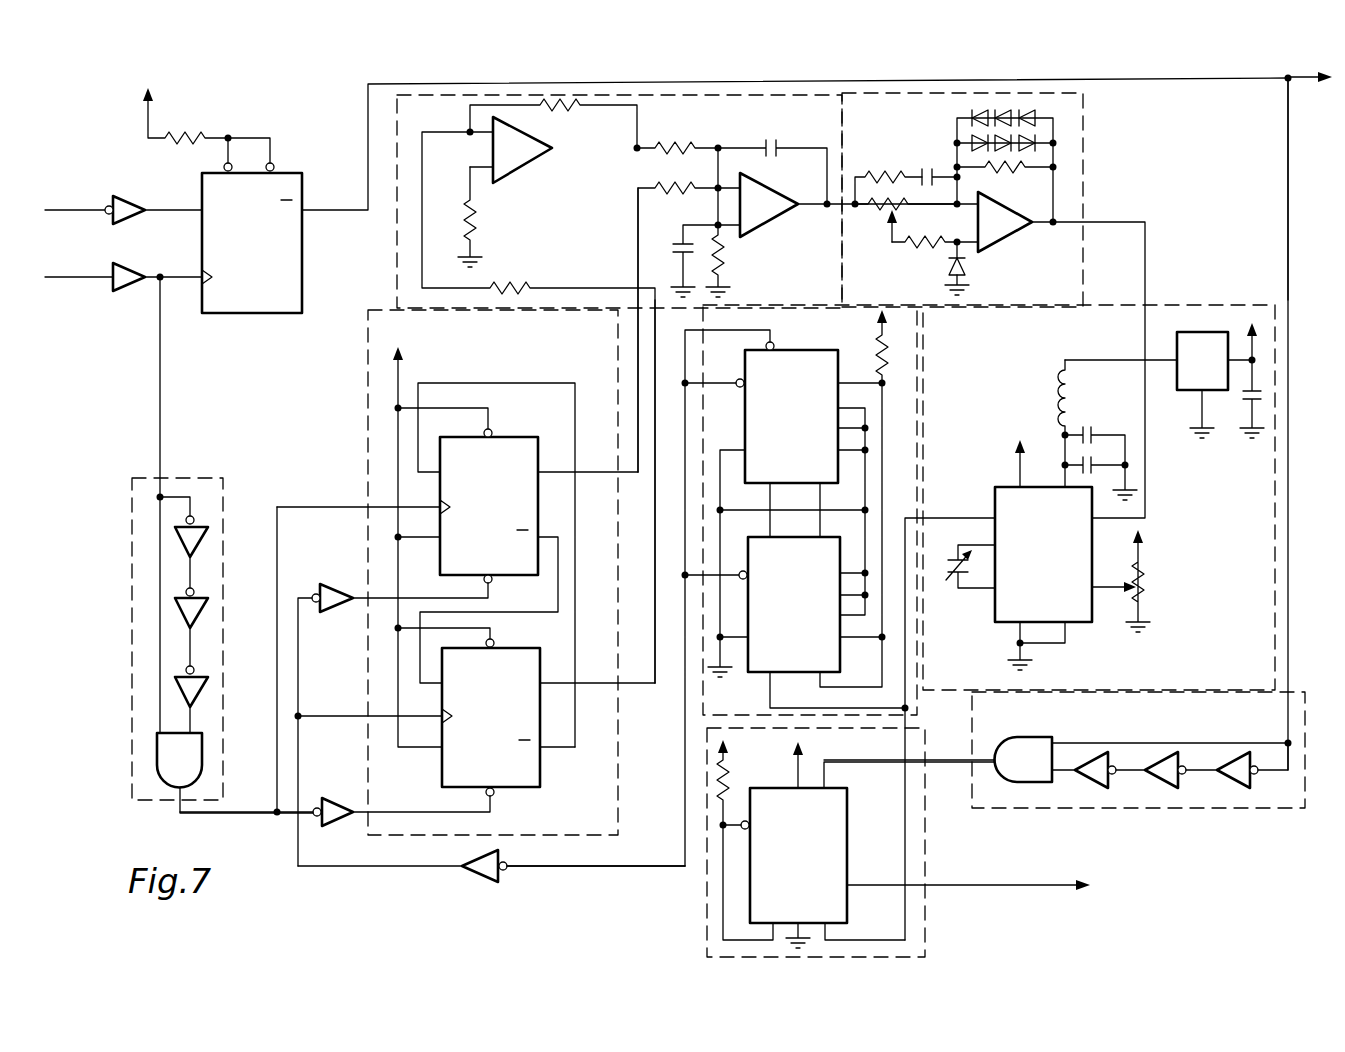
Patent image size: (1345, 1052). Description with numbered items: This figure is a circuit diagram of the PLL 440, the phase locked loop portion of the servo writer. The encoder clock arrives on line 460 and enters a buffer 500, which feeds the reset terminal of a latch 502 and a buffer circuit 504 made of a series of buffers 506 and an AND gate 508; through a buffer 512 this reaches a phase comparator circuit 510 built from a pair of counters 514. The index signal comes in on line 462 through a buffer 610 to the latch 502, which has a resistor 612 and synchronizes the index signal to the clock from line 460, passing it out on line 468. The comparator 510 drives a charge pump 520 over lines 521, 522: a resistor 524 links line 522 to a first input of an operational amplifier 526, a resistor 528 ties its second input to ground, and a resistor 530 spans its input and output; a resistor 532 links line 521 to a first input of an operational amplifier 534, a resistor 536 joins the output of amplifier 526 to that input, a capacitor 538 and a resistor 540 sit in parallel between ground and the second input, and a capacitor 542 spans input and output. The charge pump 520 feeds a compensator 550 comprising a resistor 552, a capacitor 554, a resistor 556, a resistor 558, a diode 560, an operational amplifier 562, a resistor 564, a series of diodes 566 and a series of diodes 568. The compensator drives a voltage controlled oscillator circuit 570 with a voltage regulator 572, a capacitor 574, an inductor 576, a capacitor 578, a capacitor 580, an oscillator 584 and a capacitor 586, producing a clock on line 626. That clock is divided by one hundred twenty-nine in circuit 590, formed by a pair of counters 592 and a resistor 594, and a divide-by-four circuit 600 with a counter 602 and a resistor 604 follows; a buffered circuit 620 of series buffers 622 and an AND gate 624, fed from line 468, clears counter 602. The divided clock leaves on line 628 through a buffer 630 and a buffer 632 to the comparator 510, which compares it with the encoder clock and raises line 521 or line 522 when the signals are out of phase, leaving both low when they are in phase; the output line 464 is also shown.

The PLL 440 is at (1022, 910).
The line 460 is at (90, 277).
The line 462 is at (88, 210).
The output line 464 is at (994, 886).
The line 468 is at (1292, 80).
The buffer 500 is at (140, 280).
The latch 502 is at (265, 258).
The buffer circuit 504 is at (185, 478).
The buffers 506 is at (204, 540).
The AND gate 508 is at (192, 770).
The phase comparator circuit 510 is at (368, 344).
The buffer 512 is at (342, 786).
The counters 514 is at (493, 519).
The charge pump 520 is at (397, 252).
The line 521 is at (638, 325).
The line 522 is at (655, 355).
The resistor 524 is at (518, 284).
The operational amplifier 526 is at (529, 160).
The resistor 528 is at (480, 208).
The resistor 530 is at (568, 108).
The resistor 532 is at (672, 186).
The operational amplifier 534 is at (778, 216).
The resistor 536 is at (676, 142).
The capacitor 538 is at (660, 244).
The resistor 540 is at (725, 256).
The capacitor 542 is at (772, 138).
The compensator 550 is at (1083, 125).
The resistor 552 is at (880, 172).
The capacitor 554 is at (928, 170).
The resistor 556 is at (870, 216).
The resistor 558 is at (930, 240).
The diode 560 is at (948, 266).
The operational amplifier 562 is at (1008, 238).
The resistor 564 is at (1005, 170).
The series of diodes 566 is at (995, 112).
The series of diodes 568 is at (995, 136).
The voltage controlled oscillator circuit 570 is at (1195, 305).
The voltage regulator 572 is at (1213, 372).
The capacitor 574 is at (1244, 400).
The inductor 576 is at (1055, 404).
The capacitor 578 is at (1094, 424).
The capacitor 580 is at (1102, 446).
The oscillator 584 is at (1060, 566).
The capacitor 586 is at (948, 576).
The divide-by-one hundred twenty-nine circuit 590 is at (703, 698).
The counters 592 is at (802, 431).
The resistor 594 is at (872, 346).
The divide-by-four circuit 600 is at (925, 856).
The counter 602 is at (803, 862).
The resistor 604 is at (726, 777).
The buffer 610 is at (138, 210).
The resistor 612 is at (194, 136).
The buffered circuit 620 is at (1178, 808).
The buffers 622 is at (1128, 790).
The AND gate 624 is at (1030, 774).
The line 626 is at (962, 512).
The line 628 is at (602, 866).
The buffer 630 is at (474, 880).
The buffer 632 is at (334, 584).